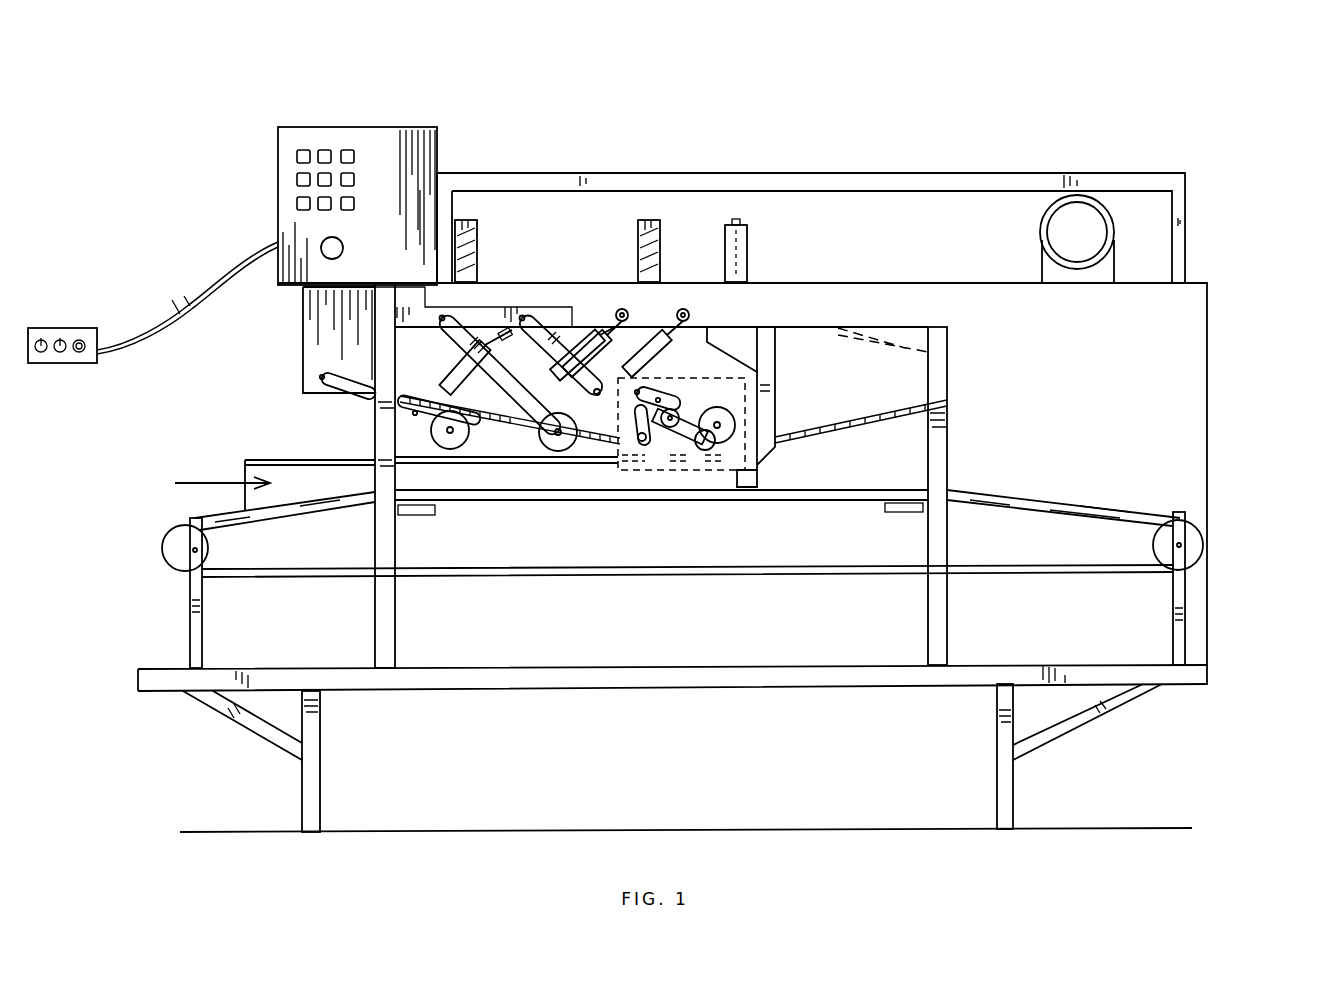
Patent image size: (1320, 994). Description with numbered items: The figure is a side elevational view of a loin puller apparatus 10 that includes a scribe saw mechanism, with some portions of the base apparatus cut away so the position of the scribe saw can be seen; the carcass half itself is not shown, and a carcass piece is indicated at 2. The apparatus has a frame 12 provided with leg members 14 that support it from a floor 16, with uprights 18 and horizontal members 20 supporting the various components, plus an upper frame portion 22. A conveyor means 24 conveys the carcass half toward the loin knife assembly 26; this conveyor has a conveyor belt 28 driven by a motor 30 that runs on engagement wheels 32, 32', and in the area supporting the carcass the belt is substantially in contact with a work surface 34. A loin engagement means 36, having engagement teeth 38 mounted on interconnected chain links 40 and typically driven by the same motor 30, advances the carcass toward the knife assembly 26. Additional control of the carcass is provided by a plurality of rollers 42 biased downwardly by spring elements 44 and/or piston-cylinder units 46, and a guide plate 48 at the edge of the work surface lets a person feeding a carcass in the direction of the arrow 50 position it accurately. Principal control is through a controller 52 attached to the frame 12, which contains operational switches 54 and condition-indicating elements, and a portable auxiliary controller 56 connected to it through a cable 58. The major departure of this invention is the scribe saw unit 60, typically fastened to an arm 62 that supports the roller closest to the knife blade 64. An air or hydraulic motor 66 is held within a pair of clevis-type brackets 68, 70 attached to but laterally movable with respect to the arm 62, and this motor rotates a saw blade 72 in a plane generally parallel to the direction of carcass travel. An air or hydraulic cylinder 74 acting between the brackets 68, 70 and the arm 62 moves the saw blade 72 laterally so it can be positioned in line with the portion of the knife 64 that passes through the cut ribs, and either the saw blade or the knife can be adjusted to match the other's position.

The article chute 2 is at (758, 330).
The loin puller apparatus 10 is at (1210, 150).
The frame 12 is at (288, 801).
The leg members 14 is at (320, 815).
The floor 16 is at (1093, 828).
The uprights 18 is at (375, 625).
The horizontal members 20 is at (1160, 686).
The upper frame portion 22 is at (848, 173).
The conveyor means 24 is at (1097, 488).
The loin knife assembly 26 is at (792, 408).
The conveyor belt 28 is at (185, 524).
The motor 30 is at (1066, 245).
The engagement wheel 32 is at (137, 593).
The engagement wheel 32' is at (1204, 546).
The work surface 34 is at (448, 506).
The loin engagement means 36 is at (902, 336).
The engagement teeth 38 is at (862, 475).
The chain links 40 is at (935, 412).
The rollers 42 is at (617, 465).
The spring elements 44 is at (658, 236).
The piston-cylinder units 46 is at (645, 345).
The guide plate 48 is at (255, 457).
The arrow 50 is at (216, 470).
The controller 52 is at (278, 182).
The operational switches 54 is at (297, 155).
The portable auxiliary controller 56 is at (65, 328).
The cable 58 is at (226, 278).
The scribe saw unit 60 is at (657, 447).
The arm 62 is at (682, 375).
The knife blade 64 is at (733, 473).
The air motor 66 is at (623, 488).
The clevis-type bracket 68 is at (637, 473).
The clevis-type bracket 70 is at (670, 447).
The saw blade 72 is at (685, 460).
The air cylinder 74 is at (738, 330).